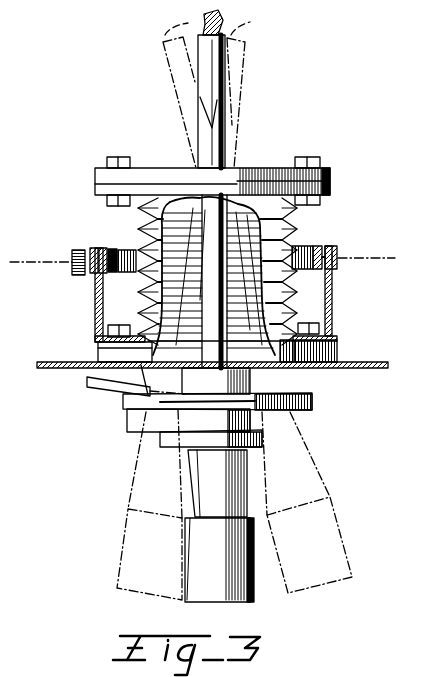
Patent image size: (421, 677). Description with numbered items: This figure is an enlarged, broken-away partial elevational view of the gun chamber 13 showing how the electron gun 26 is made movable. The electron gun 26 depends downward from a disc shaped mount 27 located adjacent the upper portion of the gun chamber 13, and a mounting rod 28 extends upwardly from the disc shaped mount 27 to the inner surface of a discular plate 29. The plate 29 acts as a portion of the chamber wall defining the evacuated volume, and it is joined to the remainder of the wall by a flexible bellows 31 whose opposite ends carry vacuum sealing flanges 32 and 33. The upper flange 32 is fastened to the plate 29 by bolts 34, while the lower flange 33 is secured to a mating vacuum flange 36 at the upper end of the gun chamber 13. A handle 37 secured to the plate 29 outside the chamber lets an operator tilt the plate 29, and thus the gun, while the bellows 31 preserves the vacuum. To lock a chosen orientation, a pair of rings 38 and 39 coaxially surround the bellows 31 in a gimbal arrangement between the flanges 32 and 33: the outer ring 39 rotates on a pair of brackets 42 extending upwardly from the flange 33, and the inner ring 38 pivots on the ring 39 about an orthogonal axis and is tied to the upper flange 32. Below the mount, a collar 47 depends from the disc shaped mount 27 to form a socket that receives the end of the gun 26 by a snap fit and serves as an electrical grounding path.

The gun chamber 13 is at (60, 362).
The electron gun 26 is at (230, 490).
The disc shaped mount 27 is at (317, 398).
The mounting rod 28 is at (196, 240).
The plate 29 is at (325, 166).
The flexible bellows 31 is at (296, 228).
The vacuum sealing flange 32 is at (332, 182).
The vacuum sealing flange 33 is at (80, 372).
The bolts 34 is at (305, 160).
The mating vacuum flange 36 is at (112, 366).
The handle 37 is at (213, 100).
The inner ring 38 is at (338, 262).
The outer ring 39 is at (318, 250).
The brackets 42 is at (95, 295).
The collar 47 is at (165, 415).